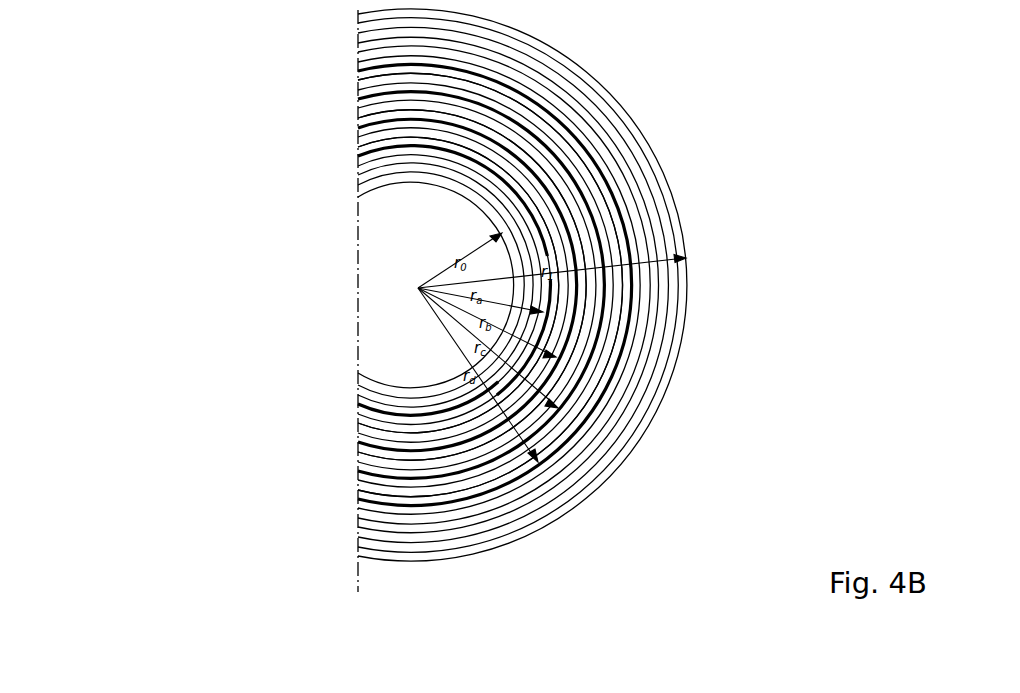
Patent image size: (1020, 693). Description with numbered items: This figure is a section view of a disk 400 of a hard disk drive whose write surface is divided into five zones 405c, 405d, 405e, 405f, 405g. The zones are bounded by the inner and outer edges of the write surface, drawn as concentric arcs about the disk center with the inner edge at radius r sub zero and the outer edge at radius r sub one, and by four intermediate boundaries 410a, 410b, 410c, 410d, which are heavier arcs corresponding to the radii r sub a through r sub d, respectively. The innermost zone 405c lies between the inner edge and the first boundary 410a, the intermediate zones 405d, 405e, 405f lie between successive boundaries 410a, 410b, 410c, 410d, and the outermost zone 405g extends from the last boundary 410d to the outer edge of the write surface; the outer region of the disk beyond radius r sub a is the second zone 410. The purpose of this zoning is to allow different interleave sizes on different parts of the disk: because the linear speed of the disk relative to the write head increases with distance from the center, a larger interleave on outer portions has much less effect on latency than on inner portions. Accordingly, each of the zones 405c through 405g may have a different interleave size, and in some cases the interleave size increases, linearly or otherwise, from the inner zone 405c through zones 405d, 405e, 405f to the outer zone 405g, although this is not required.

The disk 400 is at (119, 508).
The second zone 410 is at (690, 352).
The boundary 410a is at (357, 160).
The boundary 410b is at (357, 131).
The boundary 410c is at (357, 102).
The boundary 410d is at (357, 74).
The zone 405c is at (355, 373).
The zone 405d is at (355, 405).
The zone 405e is at (355, 437).
The zone 405f is at (355, 467).
The zone 405g is at (355, 497).